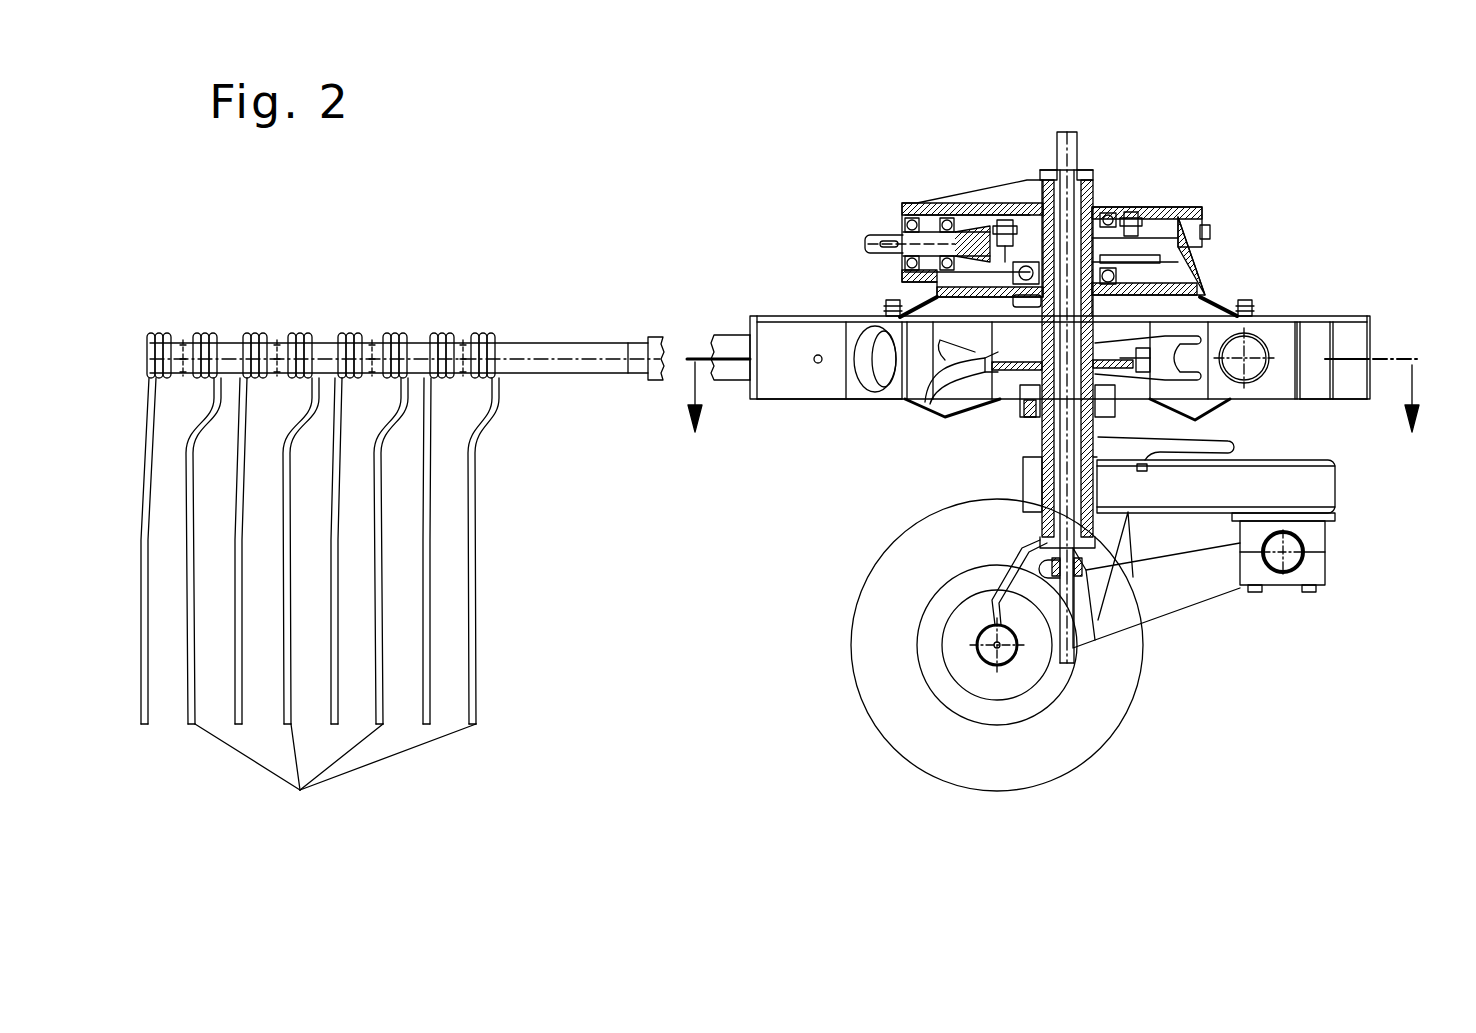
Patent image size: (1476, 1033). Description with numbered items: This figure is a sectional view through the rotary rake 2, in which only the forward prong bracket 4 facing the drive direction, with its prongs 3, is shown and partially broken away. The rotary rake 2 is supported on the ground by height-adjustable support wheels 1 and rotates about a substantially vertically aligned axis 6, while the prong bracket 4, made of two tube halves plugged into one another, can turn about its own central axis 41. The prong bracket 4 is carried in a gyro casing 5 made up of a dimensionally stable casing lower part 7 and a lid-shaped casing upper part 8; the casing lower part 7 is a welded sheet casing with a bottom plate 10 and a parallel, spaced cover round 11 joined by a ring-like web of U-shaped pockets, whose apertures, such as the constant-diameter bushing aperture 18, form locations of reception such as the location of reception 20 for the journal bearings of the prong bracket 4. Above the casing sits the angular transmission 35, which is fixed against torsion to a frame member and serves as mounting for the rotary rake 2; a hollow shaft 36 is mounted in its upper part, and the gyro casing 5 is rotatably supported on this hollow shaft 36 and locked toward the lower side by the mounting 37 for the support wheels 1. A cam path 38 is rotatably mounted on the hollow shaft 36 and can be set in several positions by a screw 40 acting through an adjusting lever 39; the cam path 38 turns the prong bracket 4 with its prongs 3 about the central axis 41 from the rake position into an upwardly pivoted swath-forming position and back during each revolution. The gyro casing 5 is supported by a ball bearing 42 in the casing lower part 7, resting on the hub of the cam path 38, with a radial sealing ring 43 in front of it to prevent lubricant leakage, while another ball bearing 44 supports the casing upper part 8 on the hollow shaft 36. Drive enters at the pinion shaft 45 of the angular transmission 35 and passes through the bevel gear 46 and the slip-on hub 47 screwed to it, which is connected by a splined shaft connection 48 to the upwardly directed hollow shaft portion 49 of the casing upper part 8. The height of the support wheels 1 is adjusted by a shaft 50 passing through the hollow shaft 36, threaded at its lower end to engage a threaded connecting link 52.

The support wheel 1 is at (905, 762).
The rotary rake 2 is at (720, 169).
The prongs 3 is at (320, 580).
The prong bracket 4 is at (593, 343).
The gyro casing 5 is at (1341, 230).
The vertical axis 6 is at (1067, 132).
The casing lower part 7 is at (1360, 422).
The casing upper part 8 is at (1218, 312).
The bottom plate 10 is at (1297, 400).
The cover round 11 is at (1297, 318).
The aperture 18 is at (839, 419).
The location of reception 20 is at (865, 383).
The angular transmission 35 is at (1200, 210).
The hollow shaft 36 is at (1093, 205).
The mounting 37 is at (1335, 506).
The cam path 38 is at (950, 400).
The adjusting lever 39 is at (1178, 448).
The screw 40 is at (1145, 470).
The central axis 41 is at (560, 355).
The ball bearing 42 is at (1028, 420).
The radial sealing ring 43 is at (1020, 400).
The ball bearing 44 is at (1195, 300).
The pinion shaft 45 is at (880, 234).
The bevel gear 46 is at (978, 218).
The slip-on hub 47 is at (1010, 218).
The splined shaft connection 48 is at (1100, 258).
The hollow shaft portion 49 is at (1138, 236).
The shaft 50 is at (1082, 170).
The threaded connecting link 52 is at (1085, 572).